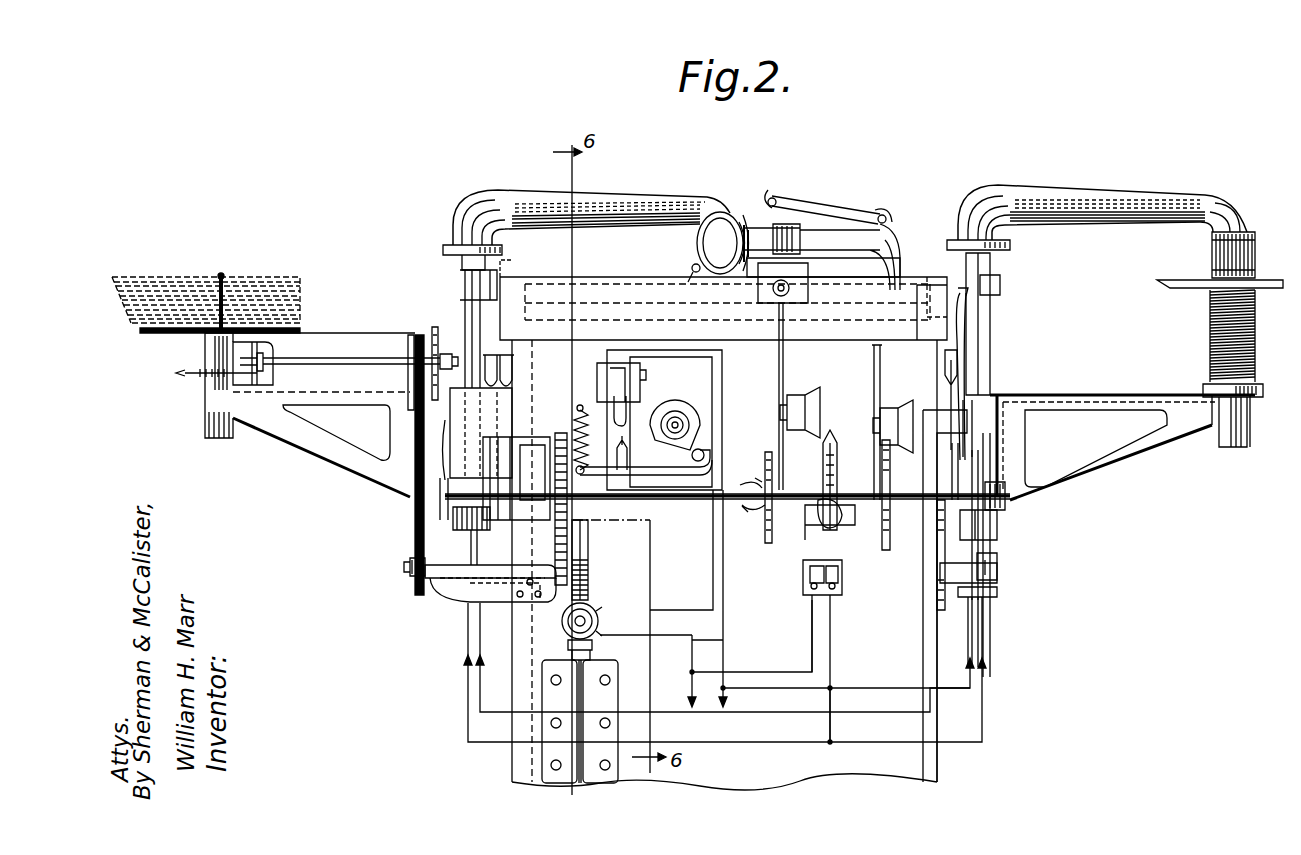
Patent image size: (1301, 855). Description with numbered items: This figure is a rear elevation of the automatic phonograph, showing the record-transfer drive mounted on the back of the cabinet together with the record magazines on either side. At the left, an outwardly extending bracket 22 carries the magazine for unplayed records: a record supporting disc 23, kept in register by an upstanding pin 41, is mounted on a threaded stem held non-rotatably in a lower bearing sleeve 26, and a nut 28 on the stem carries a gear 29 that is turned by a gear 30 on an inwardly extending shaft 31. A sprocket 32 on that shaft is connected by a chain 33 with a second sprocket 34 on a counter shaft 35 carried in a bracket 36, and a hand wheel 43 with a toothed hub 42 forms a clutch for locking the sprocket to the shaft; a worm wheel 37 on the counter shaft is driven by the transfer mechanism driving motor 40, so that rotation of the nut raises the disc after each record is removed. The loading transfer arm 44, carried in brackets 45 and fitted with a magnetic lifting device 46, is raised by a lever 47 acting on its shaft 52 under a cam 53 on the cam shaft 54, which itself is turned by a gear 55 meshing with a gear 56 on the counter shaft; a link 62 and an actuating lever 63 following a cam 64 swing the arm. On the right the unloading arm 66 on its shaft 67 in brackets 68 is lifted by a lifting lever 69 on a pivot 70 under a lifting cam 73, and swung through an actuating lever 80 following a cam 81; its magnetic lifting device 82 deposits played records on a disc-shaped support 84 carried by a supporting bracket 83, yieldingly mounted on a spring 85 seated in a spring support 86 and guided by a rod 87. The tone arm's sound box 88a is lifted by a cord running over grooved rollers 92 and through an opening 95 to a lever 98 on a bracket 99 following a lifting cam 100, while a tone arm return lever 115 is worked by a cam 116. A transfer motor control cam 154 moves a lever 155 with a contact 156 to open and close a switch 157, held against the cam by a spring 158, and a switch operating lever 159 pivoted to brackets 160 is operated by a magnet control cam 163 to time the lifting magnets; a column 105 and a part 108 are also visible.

The bracket 22 is at (305, 443).
The record supporting disc 23 is at (165, 333).
The lower bearing sleeve 26 is at (205, 411).
The nut 28 is at (210, 362).
The gear 29 is at (195, 376).
The gear 30 is at (267, 355).
The shaft 31 is at (325, 359).
The sprocket 32 is at (416, 350).
The chain 33 is at (415, 522).
The second sprocket 34 is at (410, 580).
The shaft 35 is at (525, 602).
The bracket 36 is at (440, 590).
The worm wheel 37 is at (585, 543).
The transfer mechanism driving motor 40 is at (595, 608).
The pin 41 is at (225, 288).
The hub 42 is at (440, 356).
The hand wheel 43 is at (435, 330).
The loading transfer arm 44 is at (602, 205).
The brackets 45 is at (460, 275).
The magnetic lifting device 46 is at (795, 262).
The lever 47 is at (470, 548).
The shaft 52 is at (460, 295).
The cam 53 is at (450, 462).
The cam shaft 54 is at (632, 500).
The gear 55 is at (555, 440).
The gear 56 is at (560, 590).
The link 62 is at (500, 345).
The actuating lever 63 is at (512, 372).
The cam 64 is at (498, 425).
The unloading arm 66 is at (1104, 202).
The shaft 67 is at (975, 312).
The brackets 68 is at (1000, 284).
The lifting lever 69 is at (997, 573).
The pivot 70 is at (940, 574).
The lifting cam 73 is at (1005, 500).
The actuating lever 80 is at (945, 395).
The cam 81 is at (935, 510).
The magnetic lifting device 82 is at (1212, 252).
The supporting bracket 83 is at (1065, 405).
The disc-shaped support 84 is at (1180, 283).
The spring 85 is at (1210, 318).
The spring support 86 is at (1205, 385).
The rod 87 is at (1220, 440).
The sound box 88a is at (725, 212).
The grooved rollers 92 is at (876, 200).
The opening 95 is at (882, 228).
The lever 98 is at (874, 360).
The bracket 99 is at (878, 412).
The lifting cam 100 is at (888, 550).
The column 105 is at (985, 368).
The box 108 is at (997, 525).
The tone arm return lever 115 is at (779, 358).
The cam 116 is at (770, 545).
The transfer motor control cam 154 is at (668, 410).
The lever 155 is at (640, 476).
The contact 156 is at (622, 447).
The switch 157 is at (600, 380).
The spring 158 is at (586, 415).
The switch operating lever 159 is at (803, 575).
The brackets 160 is at (843, 525).
The magnet control cam 163 is at (820, 528).